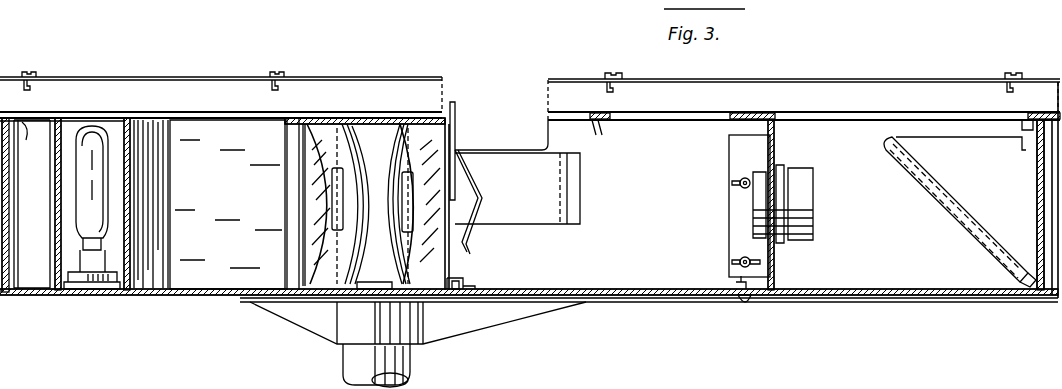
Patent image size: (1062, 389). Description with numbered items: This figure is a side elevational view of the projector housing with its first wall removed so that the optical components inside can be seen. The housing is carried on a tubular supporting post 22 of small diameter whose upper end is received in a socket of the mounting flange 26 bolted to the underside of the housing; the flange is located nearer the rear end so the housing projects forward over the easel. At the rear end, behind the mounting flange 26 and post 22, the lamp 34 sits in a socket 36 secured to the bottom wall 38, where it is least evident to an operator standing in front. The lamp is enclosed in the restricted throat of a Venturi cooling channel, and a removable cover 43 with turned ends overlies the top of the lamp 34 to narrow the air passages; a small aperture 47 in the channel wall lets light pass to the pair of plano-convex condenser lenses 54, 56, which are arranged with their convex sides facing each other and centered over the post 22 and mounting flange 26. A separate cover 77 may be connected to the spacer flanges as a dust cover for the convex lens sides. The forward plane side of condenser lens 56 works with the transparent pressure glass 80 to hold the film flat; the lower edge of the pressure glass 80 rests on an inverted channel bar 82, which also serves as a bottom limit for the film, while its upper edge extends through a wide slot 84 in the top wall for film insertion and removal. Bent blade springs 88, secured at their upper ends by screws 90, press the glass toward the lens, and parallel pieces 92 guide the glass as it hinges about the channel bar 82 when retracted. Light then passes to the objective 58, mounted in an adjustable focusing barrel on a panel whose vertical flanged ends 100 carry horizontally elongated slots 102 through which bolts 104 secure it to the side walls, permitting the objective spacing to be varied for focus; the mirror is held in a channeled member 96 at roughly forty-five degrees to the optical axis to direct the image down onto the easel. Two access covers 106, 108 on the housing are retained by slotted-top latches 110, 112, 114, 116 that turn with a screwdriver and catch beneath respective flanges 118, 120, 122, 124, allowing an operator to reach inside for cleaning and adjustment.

The supporting post 22 is at (345, 360).
The mounting flange 26 is at (475, 316).
The lamp 34 is at (92, 124).
The socket 36 is at (92, 280).
The bottom wall 38 is at (218, 297).
The removable cover 43 is at (78, 120).
The aperture 47 is at (140, 188).
The condenser lens 54 is at (312, 180).
The condenser lens 56 is at (434, 196).
The objective 58 is at (790, 180).
The cover 77 is at (344, 124).
The pressure glass 80 is at (456, 108).
The channel bar 82 is at (466, 282).
The slot 84 is at (517, 122).
The bent blade springs 88 is at (478, 198).
The screws 90 is at (452, 126).
The parallel pieces 92 is at (543, 214).
The channeled member 96 is at (960, 212).
The flanged ends 100 is at (736, 150).
The elongated slots 102 is at (732, 182).
The bolts 104 is at (742, 188).
The access cover 106 is at (218, 66).
The access cover 108 is at (848, 66).
The latch 110 is at (38, 74).
The latch 112 is at (290, 75).
The latch 114 is at (640, 60).
The latch 116 is at (1004, 74).
The flange 118 is at (37, 204).
The flange 120 is at (285, 118).
The flange 122 is at (598, 134).
The flange 124 is at (1028, 132).